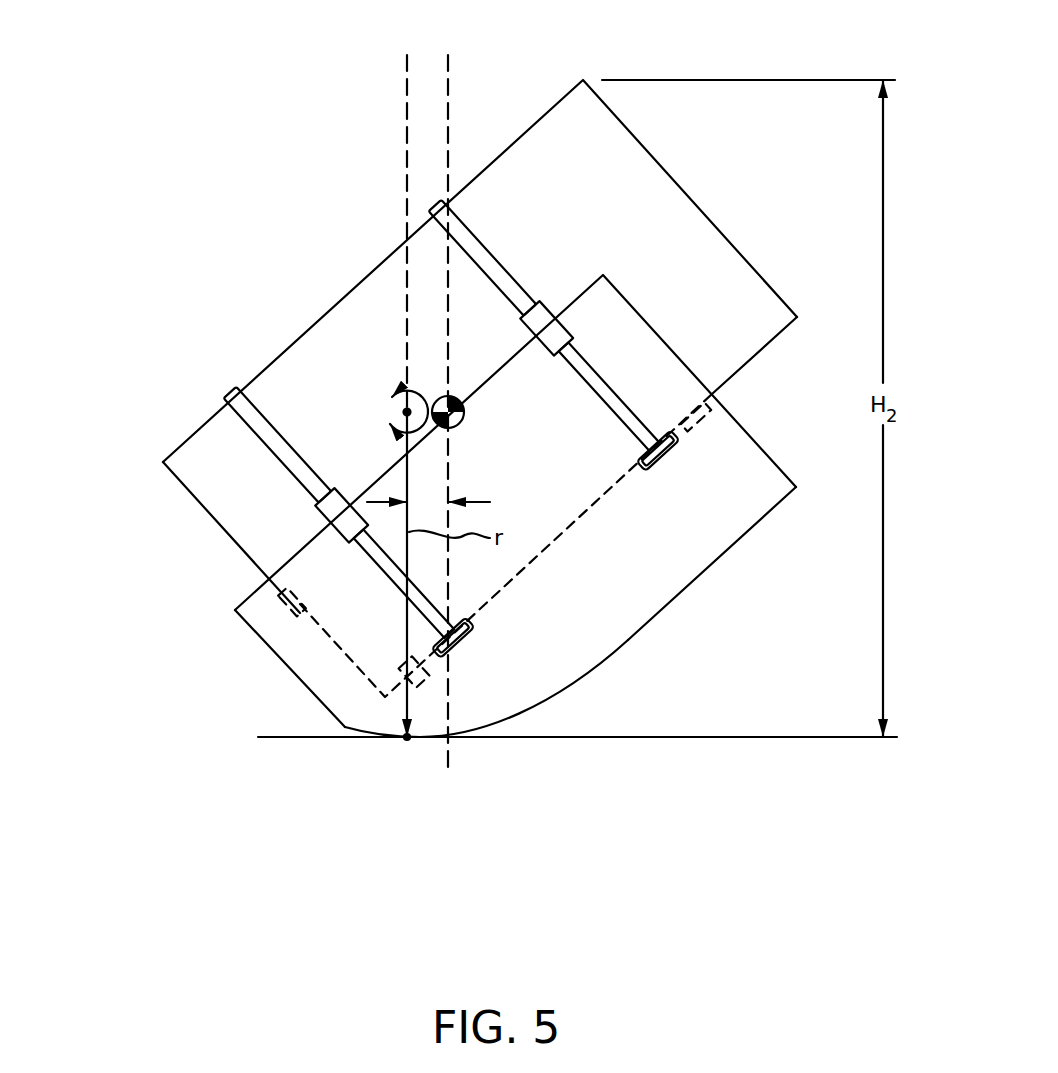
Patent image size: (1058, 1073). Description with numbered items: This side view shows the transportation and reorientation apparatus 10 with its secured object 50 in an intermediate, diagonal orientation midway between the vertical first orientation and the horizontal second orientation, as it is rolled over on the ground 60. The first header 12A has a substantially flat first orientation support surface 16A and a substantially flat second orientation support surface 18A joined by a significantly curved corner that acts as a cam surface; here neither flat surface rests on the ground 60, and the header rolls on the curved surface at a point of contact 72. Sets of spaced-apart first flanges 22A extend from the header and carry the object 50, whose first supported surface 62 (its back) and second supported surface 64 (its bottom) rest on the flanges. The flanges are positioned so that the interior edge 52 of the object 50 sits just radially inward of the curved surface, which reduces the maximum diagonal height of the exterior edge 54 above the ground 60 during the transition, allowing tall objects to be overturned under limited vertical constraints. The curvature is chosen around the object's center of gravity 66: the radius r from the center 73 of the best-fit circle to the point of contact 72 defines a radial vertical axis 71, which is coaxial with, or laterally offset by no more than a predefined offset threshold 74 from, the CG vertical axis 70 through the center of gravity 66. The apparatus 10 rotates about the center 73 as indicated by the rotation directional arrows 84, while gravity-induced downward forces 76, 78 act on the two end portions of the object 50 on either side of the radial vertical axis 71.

The transportation and reorientation apparatus 10 is at (459, 517).
The first header 12A is at (655, 625).
The first orientation support surface 16A is at (293, 673).
The second orientation support surface 18A is at (720, 556).
The first flanges 22A is at (280, 605).
The object 50 is at (472, 307).
The interior edge 52 is at (353, 740).
The exterior edge 54 is at (583, 78).
The ground 60 is at (727, 740).
The first supported surface 62 is at (740, 397).
The second supported surface 64 is at (205, 520).
The center of gravity 66 is at (455, 424).
The CG vertical axis 70 is at (450, 68).
The radial vertical axis 71 is at (407, 122).
The point of contact 72 is at (403, 742).
The center 73 is at (405, 412).
The predefined offset threshold 74 is at (366, 502).
The gravity-induced downwardly-directed force 76 is at (630, 330).
The gravity-induced downwardly-directed force 78 is at (279, 517).
The rotation directional arrows 84 is at (399, 393).